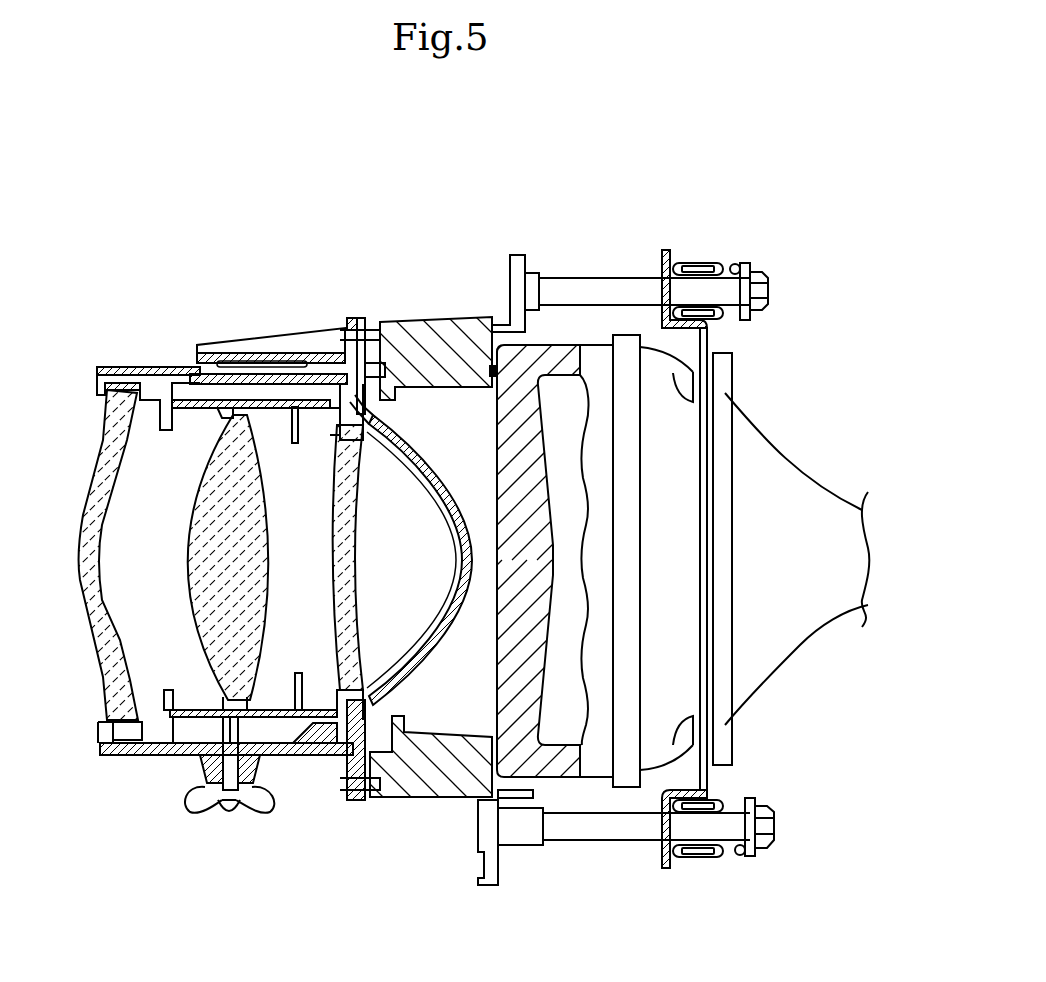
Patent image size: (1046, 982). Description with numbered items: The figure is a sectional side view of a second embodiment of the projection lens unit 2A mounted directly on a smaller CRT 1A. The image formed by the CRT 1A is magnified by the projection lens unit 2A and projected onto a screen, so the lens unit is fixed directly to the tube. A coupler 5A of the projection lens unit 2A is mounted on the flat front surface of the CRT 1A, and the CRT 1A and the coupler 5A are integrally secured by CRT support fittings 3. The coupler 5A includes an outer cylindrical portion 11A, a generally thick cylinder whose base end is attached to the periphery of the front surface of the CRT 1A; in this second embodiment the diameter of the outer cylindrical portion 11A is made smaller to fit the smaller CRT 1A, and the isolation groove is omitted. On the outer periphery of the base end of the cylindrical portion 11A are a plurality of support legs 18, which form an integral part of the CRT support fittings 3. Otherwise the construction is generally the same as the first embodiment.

The projection lens unit 2A is at (256, 312).
The coupler 5A is at (398, 315).
The outer cylindrical portion 11A is at (453, 318).
The support legs 18 is at (518, 256).
The CRT support fittings 3 is at (716, 255).
The CRT 1A is at (783, 490).